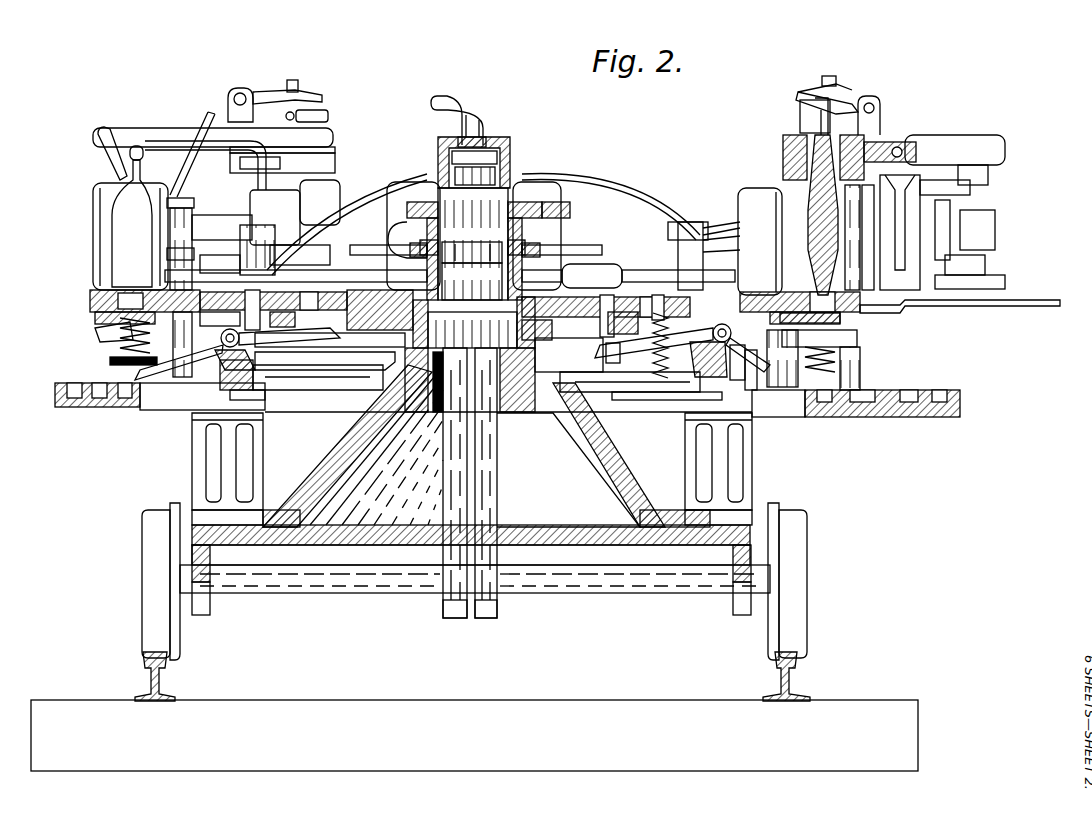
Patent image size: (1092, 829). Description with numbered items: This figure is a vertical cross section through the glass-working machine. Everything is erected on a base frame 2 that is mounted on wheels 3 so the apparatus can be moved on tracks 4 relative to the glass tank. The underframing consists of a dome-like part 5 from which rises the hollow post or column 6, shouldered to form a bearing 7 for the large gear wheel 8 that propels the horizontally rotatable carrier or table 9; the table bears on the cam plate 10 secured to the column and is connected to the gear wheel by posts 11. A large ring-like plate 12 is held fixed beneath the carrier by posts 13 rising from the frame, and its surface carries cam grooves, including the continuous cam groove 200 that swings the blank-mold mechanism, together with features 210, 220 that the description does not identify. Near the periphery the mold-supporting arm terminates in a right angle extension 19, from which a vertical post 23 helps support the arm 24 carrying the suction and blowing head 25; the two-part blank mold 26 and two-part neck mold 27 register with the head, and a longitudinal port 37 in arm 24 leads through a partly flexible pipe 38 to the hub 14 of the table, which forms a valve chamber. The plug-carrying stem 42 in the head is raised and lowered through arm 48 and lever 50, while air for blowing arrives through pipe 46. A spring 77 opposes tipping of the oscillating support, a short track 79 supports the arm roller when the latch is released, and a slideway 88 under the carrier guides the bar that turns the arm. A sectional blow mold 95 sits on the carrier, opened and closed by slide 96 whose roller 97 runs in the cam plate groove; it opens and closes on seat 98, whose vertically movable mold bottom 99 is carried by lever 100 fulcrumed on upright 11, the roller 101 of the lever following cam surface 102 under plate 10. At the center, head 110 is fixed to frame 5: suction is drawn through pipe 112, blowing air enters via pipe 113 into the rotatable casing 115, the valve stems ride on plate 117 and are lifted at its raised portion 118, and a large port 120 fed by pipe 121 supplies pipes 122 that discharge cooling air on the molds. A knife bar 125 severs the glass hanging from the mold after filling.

The base frame 2 is at (286, 543).
The wheels 3 is at (790, 593).
The tracks 4 is at (148, 677).
The dome-like part 5 is at (628, 486).
The hollow post or column 6 is at (569, 355).
The bearing 7 is at (538, 411).
The large gear wheel 8 is at (740, 393).
The main carrier or table 9 is at (572, 296).
The cam plate 10 is at (331, 347).
The posts 11 is at (222, 362).
The ring-like plate 12 is at (187, 402).
The posts 13 is at (232, 474).
The hub 14 is at (522, 232).
The right angle extension 19 is at (1005, 283).
The vertical post 23 is at (986, 182).
The arm 24 is at (145, 128).
The suction and blowing head 25 is at (330, 140).
The blank mold 26 is at (1007, 228).
The neck mold 27 is at (330, 162).
The longitudinal port 37 is at (905, 146).
The pipe 38 is at (105, 158).
The plug-carrying stem 42 is at (322, 112).
The pipe 46 is at (175, 141).
The arm 48 is at (256, 90).
The lever 50 is at (209, 110).
The spring 77 is at (665, 378).
The track 79 is at (93, 331).
The slideway 88 is at (668, 372).
The blow mold 95 is at (93, 229).
The slide 96 is at (652, 297).
The roller 97 is at (612, 334).
The seat 98 is at (92, 286).
The mold bottom 99 is at (90, 298).
The lever 100 is at (440, 352).
The roller 101 is at (476, 369).
The cam surface 102 is at (606, 353).
The head 110 is at (472, 268).
The pipe 112 is at (497, 478).
The pipe 113 is at (462, 98).
The casing 115 is at (512, 160).
The plate 117 is at (405, 208).
The raised portion 118 is at (555, 208).
The port 120 is at (470, 252).
The pipe 121 is at (443, 485).
The pipes 122 is at (583, 246).
The knife bar 125 is at (1045, 308).
The cam groove 200 is at (65, 400).
The notch 210 is at (98, 400).
The notch 220 is at (125, 400).